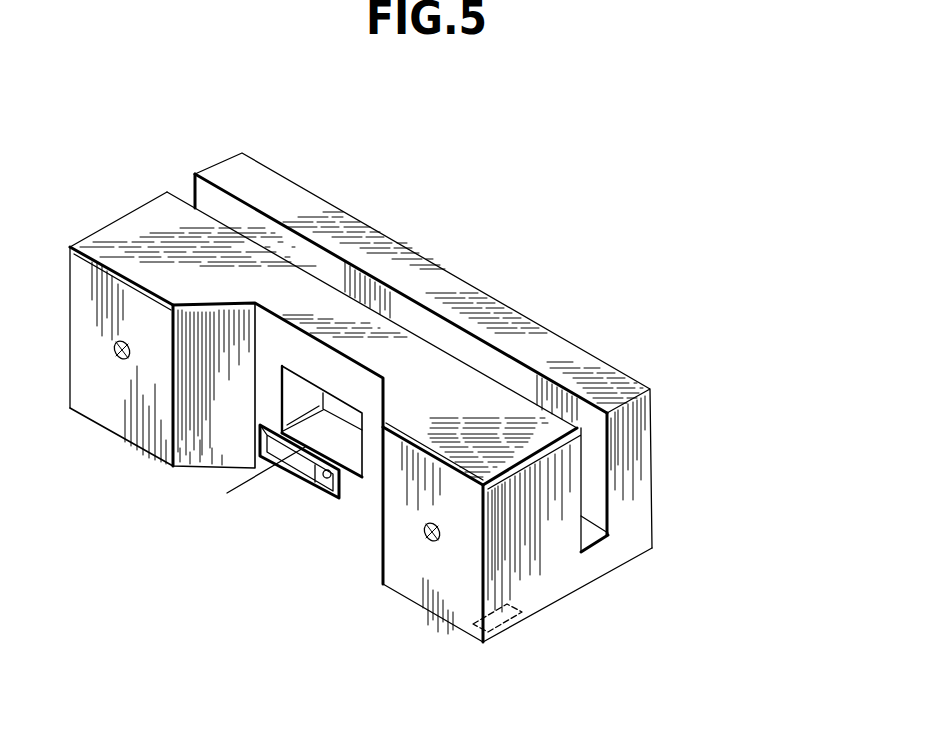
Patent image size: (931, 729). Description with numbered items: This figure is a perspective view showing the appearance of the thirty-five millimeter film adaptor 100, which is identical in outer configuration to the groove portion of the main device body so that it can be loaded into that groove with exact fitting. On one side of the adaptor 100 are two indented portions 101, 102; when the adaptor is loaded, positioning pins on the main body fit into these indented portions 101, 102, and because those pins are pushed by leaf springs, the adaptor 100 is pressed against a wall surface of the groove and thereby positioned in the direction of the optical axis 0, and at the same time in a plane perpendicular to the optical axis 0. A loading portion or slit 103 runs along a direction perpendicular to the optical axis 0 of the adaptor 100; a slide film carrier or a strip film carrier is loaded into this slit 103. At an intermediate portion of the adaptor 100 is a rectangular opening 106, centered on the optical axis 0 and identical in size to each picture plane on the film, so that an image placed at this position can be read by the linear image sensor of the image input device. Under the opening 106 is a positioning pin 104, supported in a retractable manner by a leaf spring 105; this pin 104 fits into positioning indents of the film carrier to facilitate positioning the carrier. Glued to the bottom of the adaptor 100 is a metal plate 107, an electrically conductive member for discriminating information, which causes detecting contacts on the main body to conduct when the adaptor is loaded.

The 35 mm film adaptor 100 is at (598, 562).
The indented portion 101 is at (115, 355).
The indented portion 102 is at (422, 540).
The loading portion or slit 103 is at (218, 212).
The positioning pin 104 is at (325, 480).
The leaf spring 105 is at (299, 462).
The rectangular opening 106 is at (282, 380).
The metal plate 107 is at (518, 615).
The optical axis 0 is at (250, 494).